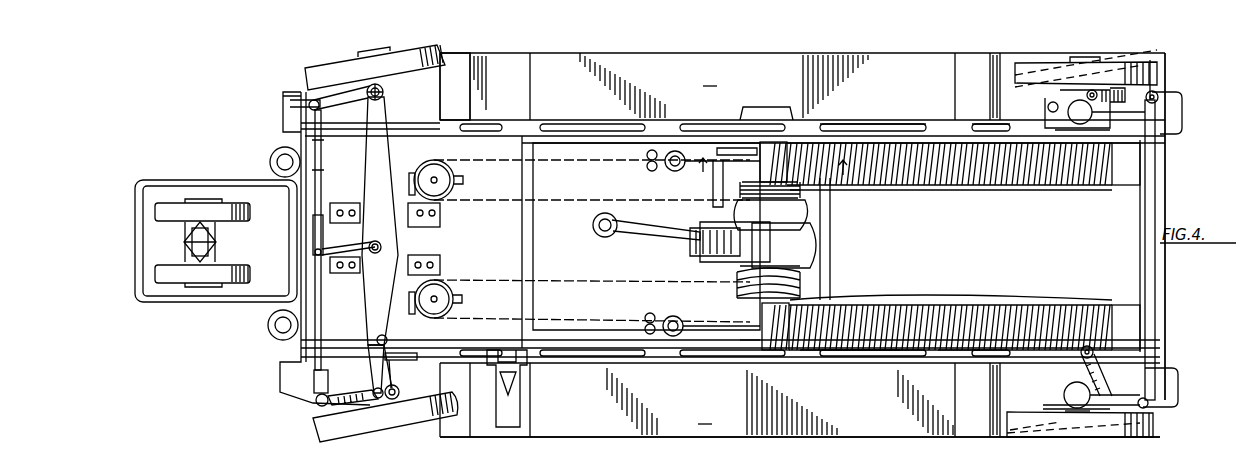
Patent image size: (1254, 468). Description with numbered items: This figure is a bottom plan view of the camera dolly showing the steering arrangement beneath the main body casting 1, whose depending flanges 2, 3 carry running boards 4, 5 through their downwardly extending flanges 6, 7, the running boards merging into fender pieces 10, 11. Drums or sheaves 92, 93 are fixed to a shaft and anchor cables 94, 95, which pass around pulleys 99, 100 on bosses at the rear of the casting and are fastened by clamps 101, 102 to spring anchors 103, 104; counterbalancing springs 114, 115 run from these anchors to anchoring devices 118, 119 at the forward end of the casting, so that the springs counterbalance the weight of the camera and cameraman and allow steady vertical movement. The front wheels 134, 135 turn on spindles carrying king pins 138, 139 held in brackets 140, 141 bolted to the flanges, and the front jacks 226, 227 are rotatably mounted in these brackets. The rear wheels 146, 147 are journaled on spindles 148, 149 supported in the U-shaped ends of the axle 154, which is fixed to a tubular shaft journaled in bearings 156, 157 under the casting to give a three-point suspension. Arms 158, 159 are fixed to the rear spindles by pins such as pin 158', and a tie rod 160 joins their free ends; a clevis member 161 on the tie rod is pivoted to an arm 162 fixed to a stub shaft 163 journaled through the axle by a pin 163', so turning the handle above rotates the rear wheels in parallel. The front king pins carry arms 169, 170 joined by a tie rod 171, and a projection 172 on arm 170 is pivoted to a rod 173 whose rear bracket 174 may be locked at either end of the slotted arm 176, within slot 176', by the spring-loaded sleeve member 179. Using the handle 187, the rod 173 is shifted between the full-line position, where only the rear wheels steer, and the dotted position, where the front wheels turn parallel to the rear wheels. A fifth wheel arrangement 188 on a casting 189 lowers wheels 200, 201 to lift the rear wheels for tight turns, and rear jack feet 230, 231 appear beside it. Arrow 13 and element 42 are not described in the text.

The main body casting 1 is at (951, 246).
The depending flange 2 is at (958, 130).
The depending flange 3 is at (970, 365).
The running board 4 is at (710, 78).
The running board 5 is at (705, 416).
The downwardly extending flange 6 is at (920, 122).
The downwardly extending flange 7 is at (938, 362).
The fender piece 10 is at (460, 58).
The fender piece 11 is at (1022, 62).
The direction arrow 13 is at (775, 180).
The connecting rod 42 is at (636, 235).
The drum or sheave 92 is at (805, 283).
The drum or sheave 93 is at (792, 208).
The cable 94 is at (594, 277).
The cable 95 is at (585, 198).
The pulley 99 is at (460, 296).
The pulley 100 is at (460, 183).
The clamp 101 is at (655, 315).
The clamp 102 is at (648, 168).
The spring anchor 103 is at (770, 330).
The spring anchor 104 is at (755, 150).
The counterbalancing spring 114 is at (885, 312).
The counterbalancing spring 115 is at (930, 165).
The anchoring device 118 is at (1122, 322).
The anchoring device 119 is at (1128, 178).
The front wheel 134 is at (1158, 73).
The front wheel 135 is at (1152, 430).
The king pin 138 is at (1102, 85).
The king pin 139 is at (1088, 437).
The bracket 140 is at (1096, 114).
The bracket 141 is at (1066, 398).
The rear wheel 146 is at (318, 64).
The rear wheel 147 is at (315, 428).
The rear spindle 148 is at (386, 97).
The rear spindle 149 is at (378, 400).
The axle 154 is at (368, 167).
The bearing 156 is at (350, 204).
The bearing 157 is at (438, 238).
The arm 158 is at (283, 92).
The pin 158' is at (380, 77).
The arm 159 is at (348, 407).
The tie rod 160 is at (313, 284).
The clevis member 161 is at (313, 252).
The arm 162 is at (383, 230).
The stub shaft 163 is at (380, 260).
The pin 163' is at (393, 241).
The arm 169 is at (1160, 98).
The arm 170 is at (1155, 395).
The tie rod 171 is at (1156, 262).
The projection 172 is at (1080, 362).
The rod 173 is at (822, 362).
The bracket 174 is at (404, 380).
The slotted arm 176 is at (368, 369).
The slot 176' is at (360, 330).
The sleeve member 179 is at (415, 436).
The handle 187 is at (515, 420).
The fifth wheel arrangement 188 is at (213, 316).
The casting 189 is at (228, 170).
The wheel 200 is at (232, 284).
The wheel 201 is at (250, 210).
The jack 226 is at (1048, 107).
The jack 227 is at (1036, 423).
The foot 230 is at (271, 150).
The foot 231 is at (270, 330).